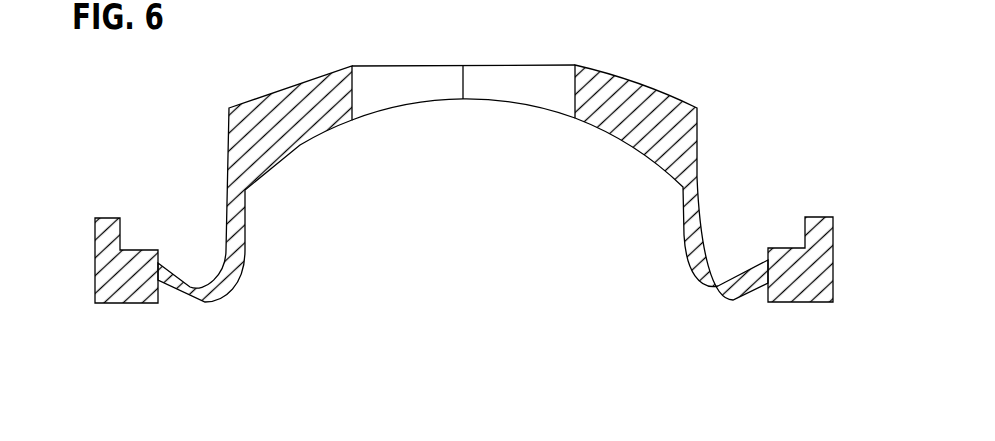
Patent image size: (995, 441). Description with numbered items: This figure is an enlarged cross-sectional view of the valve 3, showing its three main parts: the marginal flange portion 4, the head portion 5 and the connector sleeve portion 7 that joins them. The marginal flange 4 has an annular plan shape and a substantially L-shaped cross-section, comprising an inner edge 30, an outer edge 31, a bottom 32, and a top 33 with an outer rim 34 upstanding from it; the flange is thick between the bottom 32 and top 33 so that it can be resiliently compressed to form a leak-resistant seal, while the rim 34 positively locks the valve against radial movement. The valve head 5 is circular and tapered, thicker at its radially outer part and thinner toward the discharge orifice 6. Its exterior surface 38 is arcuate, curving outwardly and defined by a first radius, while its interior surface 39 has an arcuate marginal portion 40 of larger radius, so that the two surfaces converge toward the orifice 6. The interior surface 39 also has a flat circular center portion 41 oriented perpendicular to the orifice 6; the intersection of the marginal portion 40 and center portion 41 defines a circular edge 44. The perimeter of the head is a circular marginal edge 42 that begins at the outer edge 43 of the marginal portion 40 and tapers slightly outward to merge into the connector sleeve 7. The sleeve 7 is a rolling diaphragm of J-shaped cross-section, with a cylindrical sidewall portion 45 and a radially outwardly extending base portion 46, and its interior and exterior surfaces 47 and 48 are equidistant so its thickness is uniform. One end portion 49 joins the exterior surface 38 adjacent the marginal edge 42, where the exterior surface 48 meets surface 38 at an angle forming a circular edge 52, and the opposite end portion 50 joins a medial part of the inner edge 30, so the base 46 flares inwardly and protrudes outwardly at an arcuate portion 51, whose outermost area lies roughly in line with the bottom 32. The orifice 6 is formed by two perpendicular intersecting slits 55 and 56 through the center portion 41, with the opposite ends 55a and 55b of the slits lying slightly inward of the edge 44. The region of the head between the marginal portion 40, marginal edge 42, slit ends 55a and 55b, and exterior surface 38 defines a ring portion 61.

The valve 3 is at (722, 90).
The marginal flange portion 4 is at (833, 217).
The head portion 5 is at (578, 65).
The discharge orifice 6 is at (480, 57).
The connector sleeve portion 7 is at (230, 187).
The inner edge 30 is at (160, 258).
The outer edge 31 is at (93, 276).
The bottom 32 is at (128, 303).
The top 33 is at (790, 246).
The outer rim 34 is at (107, 217).
The exterior surface 38 is at (302, 143).
The interior surface 39 is at (233, 107).
The marginal portion 40 is at (305, 74).
The center portion 41 is at (442, 65).
The marginal edge 42 is at (687, 140).
The outer edge 43 is at (230, 107).
The circular edge 44 is at (348, 62).
The cylindrical sidewall portion 45 is at (238, 255).
The base portion 46 is at (732, 300).
The interior surface 47 is at (230, 202).
The exterior surface 48 is at (245, 207).
The end portion 49 is at (687, 192).
The end portion 50 is at (752, 270).
The arcuate portion 51 is at (230, 297).
The circular edge 52 is at (681, 191).
The slit 55 is at (415, 95).
The slit end 55a is at (352, 98).
The slit end 55b is at (573, 98).
The slit 56 is at (467, 85).
The ring portion 61 is at (268, 135).